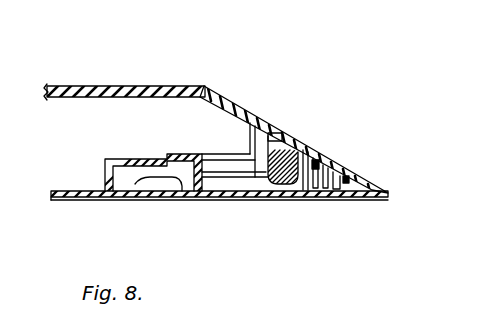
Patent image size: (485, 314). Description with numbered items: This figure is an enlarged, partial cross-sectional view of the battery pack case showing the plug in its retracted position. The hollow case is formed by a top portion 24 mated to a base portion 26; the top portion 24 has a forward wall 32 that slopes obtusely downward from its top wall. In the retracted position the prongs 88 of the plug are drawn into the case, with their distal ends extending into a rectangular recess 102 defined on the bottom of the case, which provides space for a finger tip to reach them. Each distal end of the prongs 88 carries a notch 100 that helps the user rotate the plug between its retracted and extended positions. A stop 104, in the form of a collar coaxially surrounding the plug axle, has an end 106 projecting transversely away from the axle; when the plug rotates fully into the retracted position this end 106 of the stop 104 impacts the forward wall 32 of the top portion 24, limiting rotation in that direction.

The top portion 24 is at (132, 80).
The forward wall 32 is at (218, 97).
The base portion 26 is at (88, 206).
The rectangular recess 102 is at (140, 180).
The notch 100 is at (145, 184).
The prongs 88 is at (228, 183).
The end of stop 106 is at (270, 137).
The stop 104 is at (308, 148).